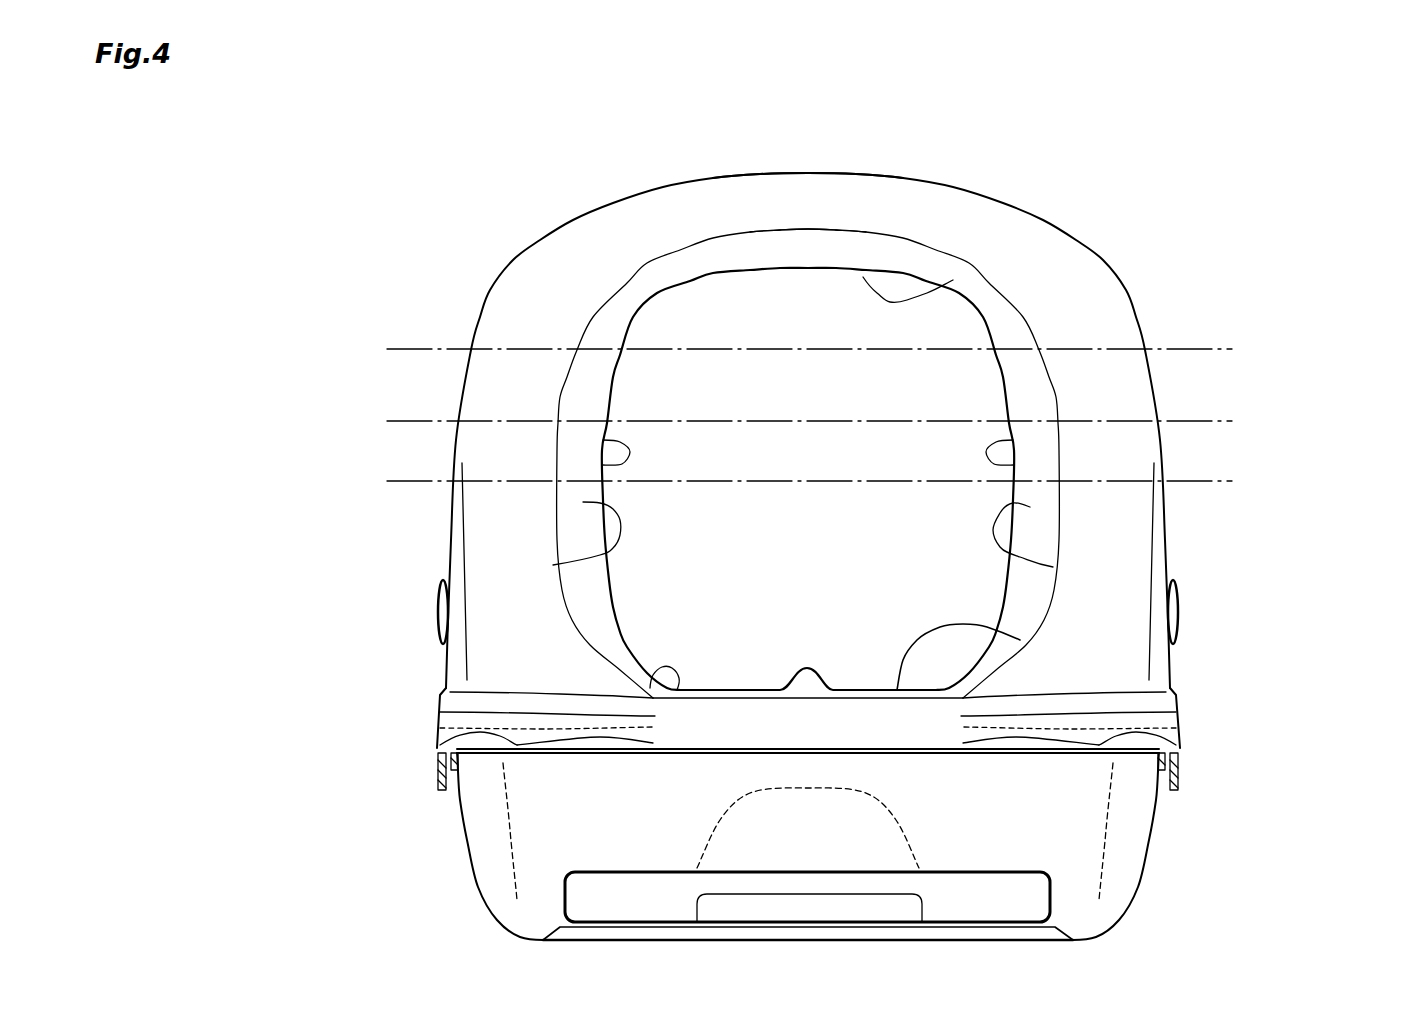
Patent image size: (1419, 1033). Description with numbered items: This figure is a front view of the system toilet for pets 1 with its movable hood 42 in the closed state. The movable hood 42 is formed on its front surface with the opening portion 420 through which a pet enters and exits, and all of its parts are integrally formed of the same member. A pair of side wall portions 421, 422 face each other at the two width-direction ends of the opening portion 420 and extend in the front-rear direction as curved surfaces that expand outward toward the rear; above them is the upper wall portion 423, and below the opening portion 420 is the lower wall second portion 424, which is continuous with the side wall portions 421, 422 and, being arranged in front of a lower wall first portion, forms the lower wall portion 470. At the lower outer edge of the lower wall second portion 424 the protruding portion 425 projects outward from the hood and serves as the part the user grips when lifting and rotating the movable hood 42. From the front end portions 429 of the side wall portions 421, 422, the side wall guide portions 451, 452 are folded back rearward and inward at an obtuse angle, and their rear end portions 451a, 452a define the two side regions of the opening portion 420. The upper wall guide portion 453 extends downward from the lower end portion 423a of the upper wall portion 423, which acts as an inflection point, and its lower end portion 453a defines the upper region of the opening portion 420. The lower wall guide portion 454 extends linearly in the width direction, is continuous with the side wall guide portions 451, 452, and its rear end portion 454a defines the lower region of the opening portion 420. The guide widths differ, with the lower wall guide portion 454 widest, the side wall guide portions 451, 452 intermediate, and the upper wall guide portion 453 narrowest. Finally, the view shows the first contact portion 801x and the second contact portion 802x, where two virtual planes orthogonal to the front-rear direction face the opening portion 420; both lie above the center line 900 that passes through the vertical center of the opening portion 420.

The system toilet for pets 1 is at (470, 166).
The movable hood 42 is at (1002, 188).
The opening portion 420 is at (832, 534).
The side wall portion 421 is at (490, 530).
The side wall portion 422 is at (1123, 528).
The upper wall portion 423 is at (785, 190).
The lower end portion of the upper wall portion 423a is at (793, 223).
The lower wall second portion 424 is at (888, 833).
The lower wall portion 470 is at (808, 846).
The protruding portion 425 is at (497, 733).
The front end portion 429 is at (560, 397).
The side wall guide portion 451 is at (553, 565).
The rear end portion of the side wall guide portion 451a is at (603, 462).
The side wall guide portion 452 is at (1053, 567).
The rear end portion of the side wall guide portion 452a is at (1013, 463).
The upper wall guide portion 453 is at (810, 250).
The lower end portion of the upper wall guide portion 453a is at (953, 280).
The lower wall guide portion 454 is at (677, 690).
The rear end portion of the lower wall guide portion 454a is at (1020, 640).
The first contact portion 801x is at (903, 332).
The second contact portion 802x is at (903, 404).
The center line 900 is at (1208, 481).